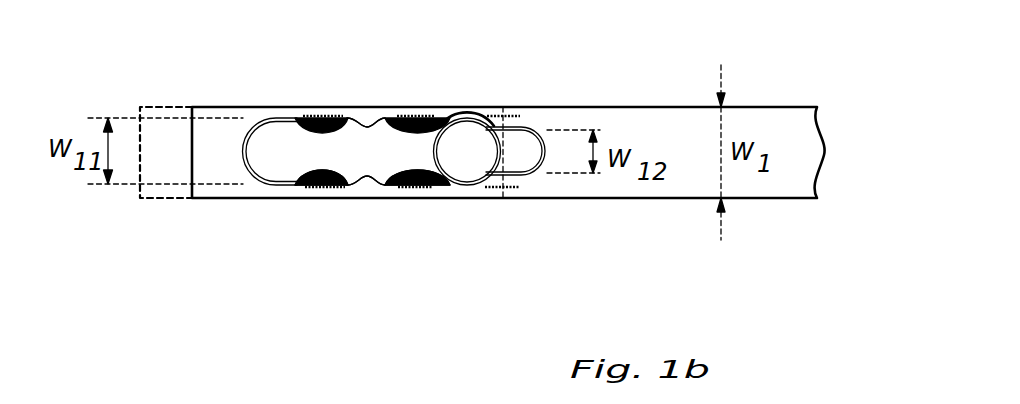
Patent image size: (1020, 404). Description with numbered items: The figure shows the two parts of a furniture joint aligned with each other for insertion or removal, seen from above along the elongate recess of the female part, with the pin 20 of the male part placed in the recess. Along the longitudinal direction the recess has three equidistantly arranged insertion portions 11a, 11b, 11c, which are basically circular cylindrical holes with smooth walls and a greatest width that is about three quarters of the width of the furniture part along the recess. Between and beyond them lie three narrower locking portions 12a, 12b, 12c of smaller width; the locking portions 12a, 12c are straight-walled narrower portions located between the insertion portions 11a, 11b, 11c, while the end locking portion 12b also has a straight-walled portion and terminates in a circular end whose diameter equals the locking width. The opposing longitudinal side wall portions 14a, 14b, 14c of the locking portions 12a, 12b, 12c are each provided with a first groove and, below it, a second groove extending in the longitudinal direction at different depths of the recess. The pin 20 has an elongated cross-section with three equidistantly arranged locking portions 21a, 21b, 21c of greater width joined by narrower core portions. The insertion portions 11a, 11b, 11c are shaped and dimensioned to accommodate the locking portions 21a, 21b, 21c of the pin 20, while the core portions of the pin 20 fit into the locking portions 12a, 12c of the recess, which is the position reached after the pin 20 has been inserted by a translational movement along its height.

The pin 20 is at (388, 158).
The insertion portion 11a is at (278, 204).
The insertion portion 11b is at (467, 205).
The insertion portion 11c is at (375, 200).
The locking portion 12a is at (330, 198).
The end locking portion 12b is at (495, 197).
The locking portion 12c is at (427, 198).
The longitudinal side wall portion 14a is at (327, 116).
The longitudinal side wall portion 14b is at (520, 116).
The longitudinal side wall portion 14c is at (430, 116).
The locking portion 21a is at (279, 152).
The locking portion 21b is at (463, 152).
The locking portion 21c is at (372, 130).